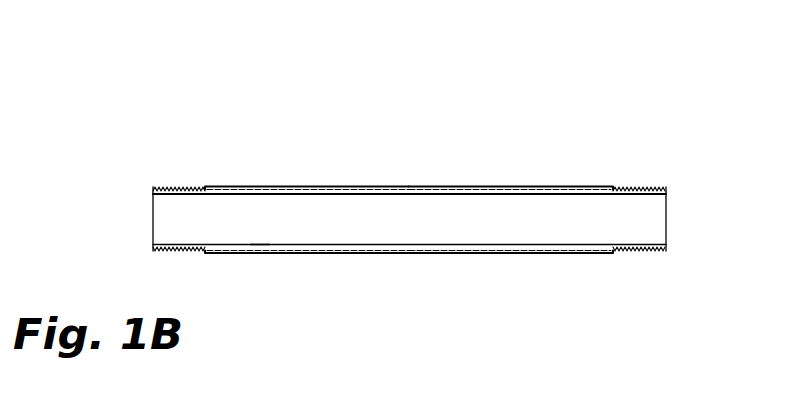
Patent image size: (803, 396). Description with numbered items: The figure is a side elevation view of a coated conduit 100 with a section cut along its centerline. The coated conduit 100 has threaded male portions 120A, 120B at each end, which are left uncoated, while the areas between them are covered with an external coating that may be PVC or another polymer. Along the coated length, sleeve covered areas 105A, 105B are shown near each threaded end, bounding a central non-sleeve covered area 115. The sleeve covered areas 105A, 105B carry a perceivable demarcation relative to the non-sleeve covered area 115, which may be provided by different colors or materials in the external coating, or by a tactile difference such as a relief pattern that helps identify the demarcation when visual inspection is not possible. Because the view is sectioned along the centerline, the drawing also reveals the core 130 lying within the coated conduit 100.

The coated conduit 100 is at (426, 113).
The sleeve covered area 105A is at (230, 186).
The sleeve covered area 105B is at (593, 186).
The non-sleeve covered area 115 is at (420, 251).
The threaded male portion 120A is at (172, 188).
The threaded male portion 120B is at (647, 186).
The core 130 is at (266, 244).